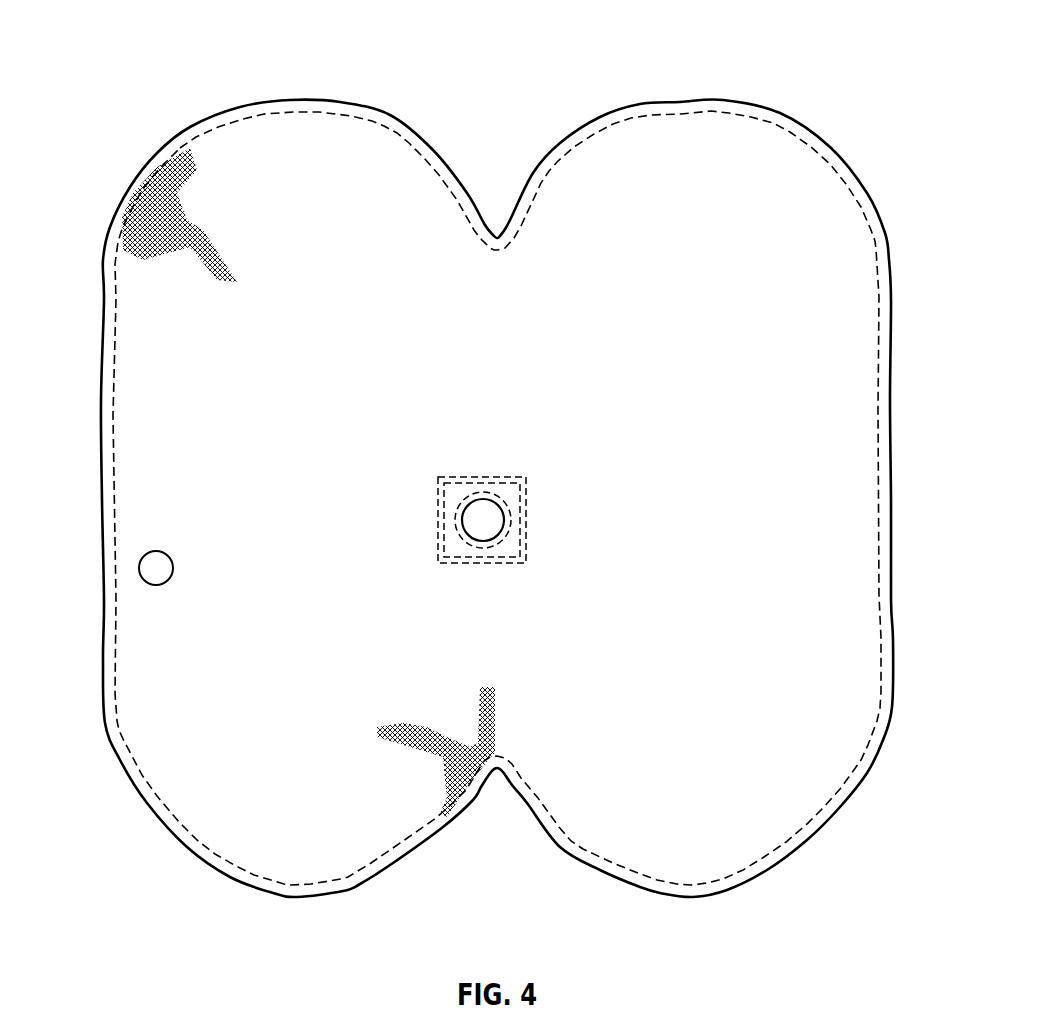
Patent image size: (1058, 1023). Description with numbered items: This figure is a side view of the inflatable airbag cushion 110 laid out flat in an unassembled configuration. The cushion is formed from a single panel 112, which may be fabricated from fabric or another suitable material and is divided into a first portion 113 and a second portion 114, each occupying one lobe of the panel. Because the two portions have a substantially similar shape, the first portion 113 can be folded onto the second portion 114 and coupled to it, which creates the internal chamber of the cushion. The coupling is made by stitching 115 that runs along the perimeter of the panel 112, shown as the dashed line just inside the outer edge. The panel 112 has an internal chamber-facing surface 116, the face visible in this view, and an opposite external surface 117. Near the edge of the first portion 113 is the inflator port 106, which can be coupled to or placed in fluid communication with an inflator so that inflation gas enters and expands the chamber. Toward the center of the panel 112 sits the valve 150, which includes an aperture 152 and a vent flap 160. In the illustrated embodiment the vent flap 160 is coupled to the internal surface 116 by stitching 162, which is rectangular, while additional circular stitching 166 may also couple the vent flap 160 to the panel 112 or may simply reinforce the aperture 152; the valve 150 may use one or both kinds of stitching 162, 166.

The inflator port 106 is at (140, 568).
The inflatable airbag cushion 110 is at (213, 92).
The panel 112 is at (220, 820).
The first portion 113 is at (298, 358).
The second portion 114 is at (740, 356).
The stitching 115 is at (877, 333).
The internal chamber-facing surface 116 is at (547, 220).
The external surface 117 is at (695, 130).
The valve 150 is at (504, 528).
The aperture 152 is at (487, 512).
The vent flap 160 is at (525, 503).
The stitching 162 is at (492, 562).
The stitching 166 is at (455, 528).